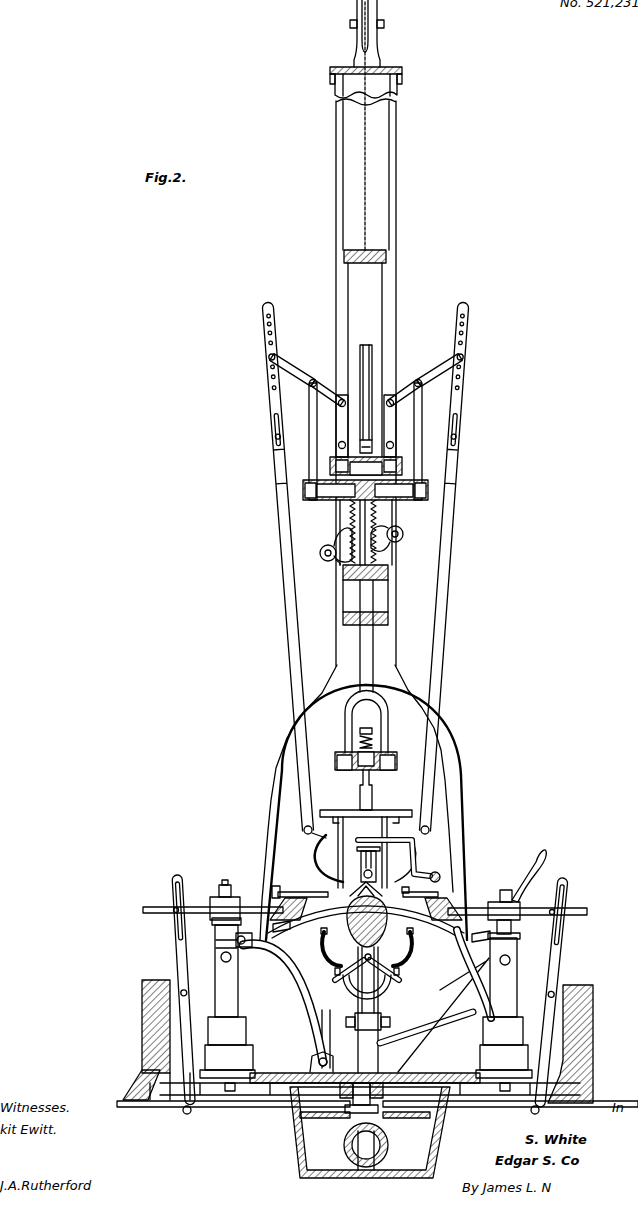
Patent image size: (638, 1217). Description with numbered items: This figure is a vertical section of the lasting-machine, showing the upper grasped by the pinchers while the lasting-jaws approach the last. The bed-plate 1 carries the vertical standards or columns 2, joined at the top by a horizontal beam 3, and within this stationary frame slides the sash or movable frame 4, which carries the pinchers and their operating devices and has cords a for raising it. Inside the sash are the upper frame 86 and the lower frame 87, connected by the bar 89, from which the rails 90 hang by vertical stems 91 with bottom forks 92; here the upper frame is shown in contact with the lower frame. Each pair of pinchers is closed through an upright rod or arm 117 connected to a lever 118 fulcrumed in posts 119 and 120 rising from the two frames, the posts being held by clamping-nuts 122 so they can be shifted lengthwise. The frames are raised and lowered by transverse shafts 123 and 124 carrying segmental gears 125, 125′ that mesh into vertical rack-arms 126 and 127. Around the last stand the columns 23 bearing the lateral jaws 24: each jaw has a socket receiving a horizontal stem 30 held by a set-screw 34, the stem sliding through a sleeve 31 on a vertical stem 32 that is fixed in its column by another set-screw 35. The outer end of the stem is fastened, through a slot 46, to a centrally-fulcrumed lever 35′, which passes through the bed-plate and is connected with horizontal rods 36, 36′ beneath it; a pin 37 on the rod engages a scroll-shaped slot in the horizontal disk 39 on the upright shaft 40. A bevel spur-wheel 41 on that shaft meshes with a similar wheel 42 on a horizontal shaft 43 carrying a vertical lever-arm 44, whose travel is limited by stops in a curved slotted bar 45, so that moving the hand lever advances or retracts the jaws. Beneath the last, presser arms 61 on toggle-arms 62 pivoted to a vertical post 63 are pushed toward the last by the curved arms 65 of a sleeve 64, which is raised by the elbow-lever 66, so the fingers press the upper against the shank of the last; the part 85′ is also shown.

The bed-plate 1 is at (607, 1083).
The vertical standards or columns 2 is at (394, 853).
The horizontal beam 3 is at (402, 70).
The sliding sash or movable frame 4 is at (388, 256).
The cords a is at (367, 203).
The columns 23 is at (366, 998).
The lateral jaws 24 is at (292, 897).
The horizontal stem 30 is at (365, 900).
The sleeve 31 is at (365, 908).
The vertical stem 32 is at (512, 928).
The set-screw 34 is at (365, 886).
The set-screw 35 is at (221, 957).
The centrally-fulcrumed lever 35′ is at (172, 957).
The horizontal rod 36 is at (233, 1113).
The horizontal rod 36′ is at (510, 1113).
The pin 37 is at (345, 1112).
The horizontal disk 39 is at (365, 1124).
The upright shaft 40 is at (350, 1093).
The bevel spur-wheel 41 is at (348, 1130).
The bevel wheel 42 is at (383, 1148).
The horizontal shaft 43 is at (366, 929).
The vertical lever-arm 44 is at (538, 876).
The curved slotted bar 45 is at (381, 934).
The slot 46 is at (172, 915).
The vibrating arms or pressers 61 is at (367, 947).
The toggle-arms 62 is at (336, 980).
The vertical post 63 is at (384, 1038).
The collar or sleeve 64 is at (356, 1039).
The yokes or curved arms 65 is at (390, 998).
The elbow-lever 66 is at (310, 1010).
The crank handle 85′ is at (372, 876).
The upper bar or frame 86 is at (398, 457).
The frame 87 is at (429, 490).
The bar 89 is at (390, 573).
The rails 90 is at (360, 766).
The vertical stems 91 is at (363, 800).
The bottom forks or bifurcations 92 is at (372, 731).
The upright rod or arm 117 is at (284, 512).
The lever 118 is at (296, 370).
The fulcrum-post 119 is at (338, 400).
The fulcrum-post 120 is at (309, 423).
The clamping-nuts 122 is at (350, 515).
The transverse shaft 123 is at (404, 534).
The transverse shaft 124 is at (320, 552).
The segmental spur disks or gears 125 is at (391, 553).
The segmental spur disk or gear 125′ is at (332, 560).
The vertical rack-arm 126 is at (376, 513).
The vertical rack-arm 127 is at (345, 530).